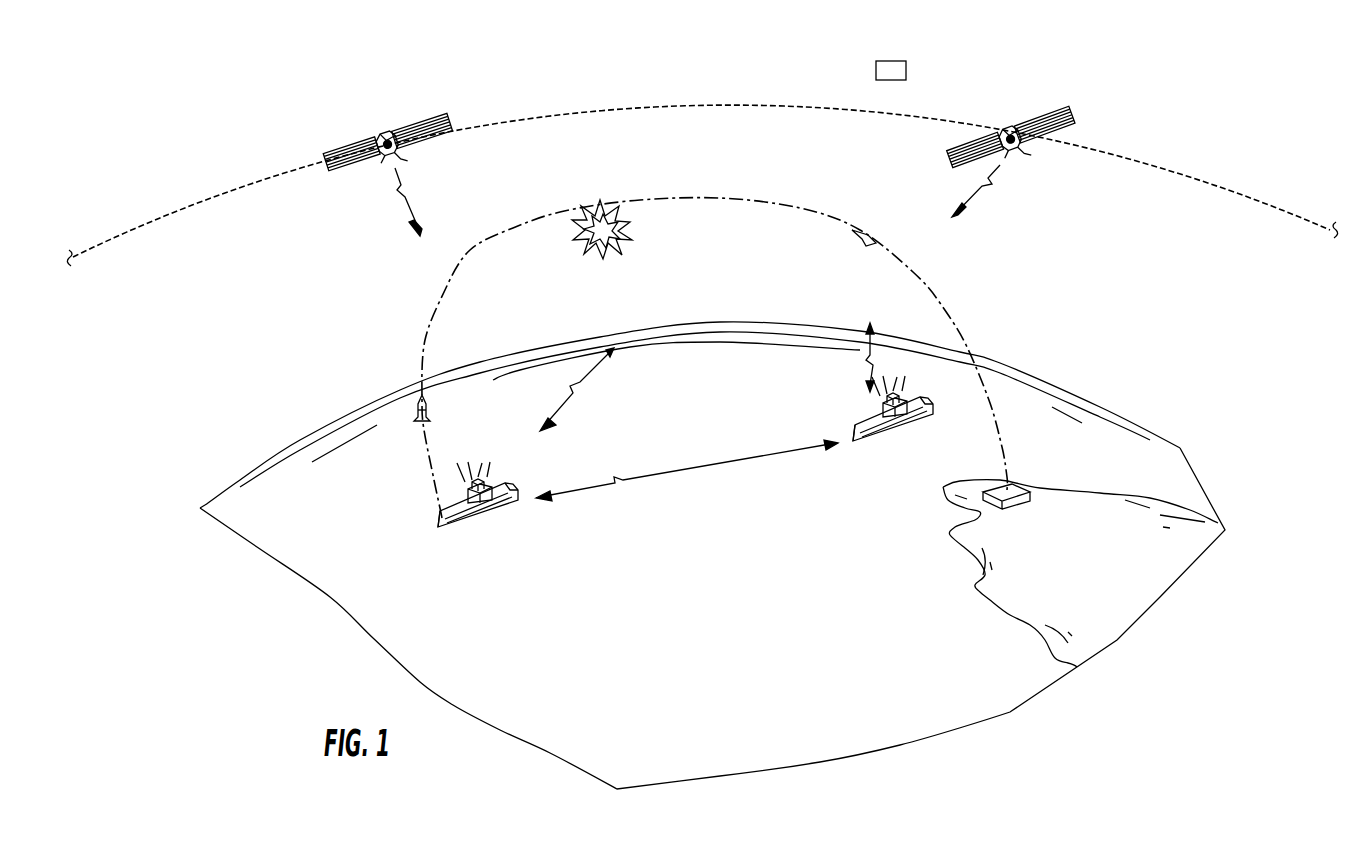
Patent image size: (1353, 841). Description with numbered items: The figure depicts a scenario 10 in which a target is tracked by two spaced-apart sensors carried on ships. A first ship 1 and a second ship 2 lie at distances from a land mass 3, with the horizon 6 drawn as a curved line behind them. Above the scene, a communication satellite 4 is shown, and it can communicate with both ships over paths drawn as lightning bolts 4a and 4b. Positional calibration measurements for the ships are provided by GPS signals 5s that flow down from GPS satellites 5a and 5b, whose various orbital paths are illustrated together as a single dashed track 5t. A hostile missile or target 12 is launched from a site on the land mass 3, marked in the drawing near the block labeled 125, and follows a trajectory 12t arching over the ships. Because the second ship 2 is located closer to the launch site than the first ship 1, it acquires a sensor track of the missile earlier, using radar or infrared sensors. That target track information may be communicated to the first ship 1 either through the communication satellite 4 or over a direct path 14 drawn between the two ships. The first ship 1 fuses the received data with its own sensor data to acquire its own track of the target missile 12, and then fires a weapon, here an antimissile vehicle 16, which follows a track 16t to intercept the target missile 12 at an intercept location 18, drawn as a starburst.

The first ship 1 is at (505, 509).
The second ship 2 is at (890, 446).
The land mass 3 is at (1103, 505).
The communication satellite 4 is at (955, 70).
The communication path 4a is at (594, 366).
The communication path 4b is at (862, 368).
The GPS satellite 5a is at (379, 130).
The GPS satellite 5b is at (1010, 125).
The GPS signals 5s is at (398, 190).
The orbital paths 5t is at (487, 126).
The horizon 6 is at (1038, 376).
The scenario 10 is at (485, 753).
The target missile 12 is at (858, 238).
The trajectory 12t is at (926, 285).
The target 125 is at (1012, 490).
The direct path 14 is at (690, 476).
The antimissile vehicle 16 is at (418, 405).
The track 16t is at (466, 256).
The intercept location 18 is at (580, 232).